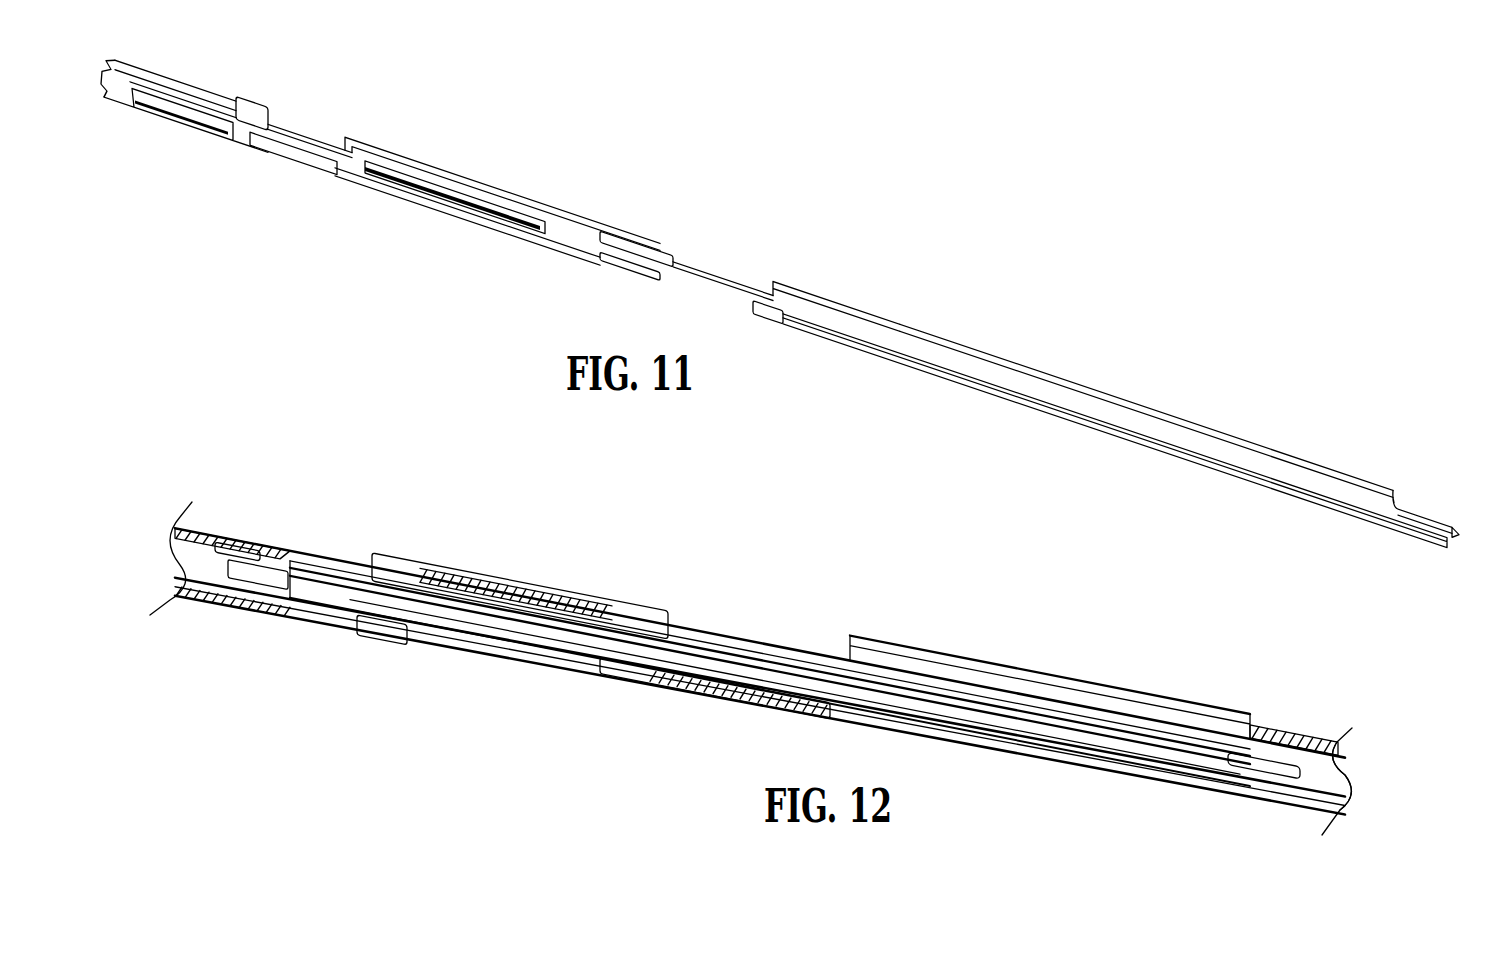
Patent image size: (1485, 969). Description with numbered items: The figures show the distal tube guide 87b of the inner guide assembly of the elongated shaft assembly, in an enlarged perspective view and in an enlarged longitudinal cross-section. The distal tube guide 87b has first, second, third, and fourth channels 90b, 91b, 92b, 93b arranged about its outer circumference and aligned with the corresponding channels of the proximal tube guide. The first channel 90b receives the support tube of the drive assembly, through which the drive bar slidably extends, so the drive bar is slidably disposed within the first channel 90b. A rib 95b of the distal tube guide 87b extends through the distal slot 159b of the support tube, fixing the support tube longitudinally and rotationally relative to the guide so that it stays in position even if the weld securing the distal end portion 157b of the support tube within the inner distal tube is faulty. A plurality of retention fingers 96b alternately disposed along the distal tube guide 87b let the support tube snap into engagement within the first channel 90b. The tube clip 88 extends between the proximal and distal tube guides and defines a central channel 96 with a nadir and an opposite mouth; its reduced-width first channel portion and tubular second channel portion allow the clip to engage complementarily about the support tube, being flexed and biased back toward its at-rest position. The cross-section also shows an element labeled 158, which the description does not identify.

In FIG. 11, the distal tube guide 87b is at (831, 278).
In FIG. 12, the tube clip 88 is at (223, 597).
In FIG. 11, the first channel 90b is at (838, 312).
In FIG. 11, the second channel 91b is at (1400, 503).
In FIG. 11, the third channel 92b is at (1452, 548).
In FIG. 11, the fourth channel 93b is at (1433, 543).
In FIG. 11, the rib 95b is at (519, 217).
In FIG. 12, the rib 95b is at (1083, 730).
In FIG. 12, the central channel 96 is at (273, 580).
In FIG. 11, the retention fingers 96b is at (270, 143).
In FIG. 12, the retention fingers 96b is at (490, 558).
In FIG. 12, the distal end portion 157b is at (1325, 778).
In FIG. 12, the elongate member 158 is at (713, 633).
In FIG. 12, the distal slot 159b is at (210, 540).